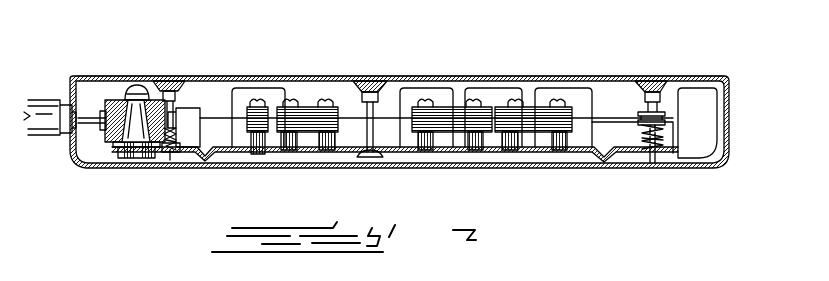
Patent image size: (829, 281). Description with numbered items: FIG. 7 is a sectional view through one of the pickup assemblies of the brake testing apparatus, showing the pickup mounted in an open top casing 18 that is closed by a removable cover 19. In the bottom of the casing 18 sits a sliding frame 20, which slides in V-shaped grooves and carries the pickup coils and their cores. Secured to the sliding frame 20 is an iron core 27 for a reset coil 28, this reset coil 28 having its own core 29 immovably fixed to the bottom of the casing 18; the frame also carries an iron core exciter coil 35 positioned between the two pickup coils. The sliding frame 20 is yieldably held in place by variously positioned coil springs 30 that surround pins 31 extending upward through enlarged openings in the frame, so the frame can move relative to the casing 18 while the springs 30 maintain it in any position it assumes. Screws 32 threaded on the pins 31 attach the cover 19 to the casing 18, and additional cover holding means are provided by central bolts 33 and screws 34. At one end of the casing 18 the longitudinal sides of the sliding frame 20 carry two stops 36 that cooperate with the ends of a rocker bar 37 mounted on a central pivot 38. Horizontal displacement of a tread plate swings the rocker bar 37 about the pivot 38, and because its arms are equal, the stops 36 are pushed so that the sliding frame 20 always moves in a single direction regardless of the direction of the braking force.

The pickup casing 18 is at (710, 168).
The removable cover 19 is at (618, 77).
The sliding frame 20 is at (528, 153).
The iron core 27 is at (305, 112).
The reset coil 28 is at (240, 93).
The core of reset coil 29 is at (257, 127).
The coil springs 30 is at (643, 138).
The pins 31 is at (648, 163).
The screws 32 is at (660, 97).
The central bolts 33 is at (373, 117).
The screws 34 is at (363, 78).
The iron core exciter coil 35 is at (498, 107).
The stops 36 is at (190, 110).
The rocker bar 37 is at (110, 140).
The central pivot 38 is at (135, 85).